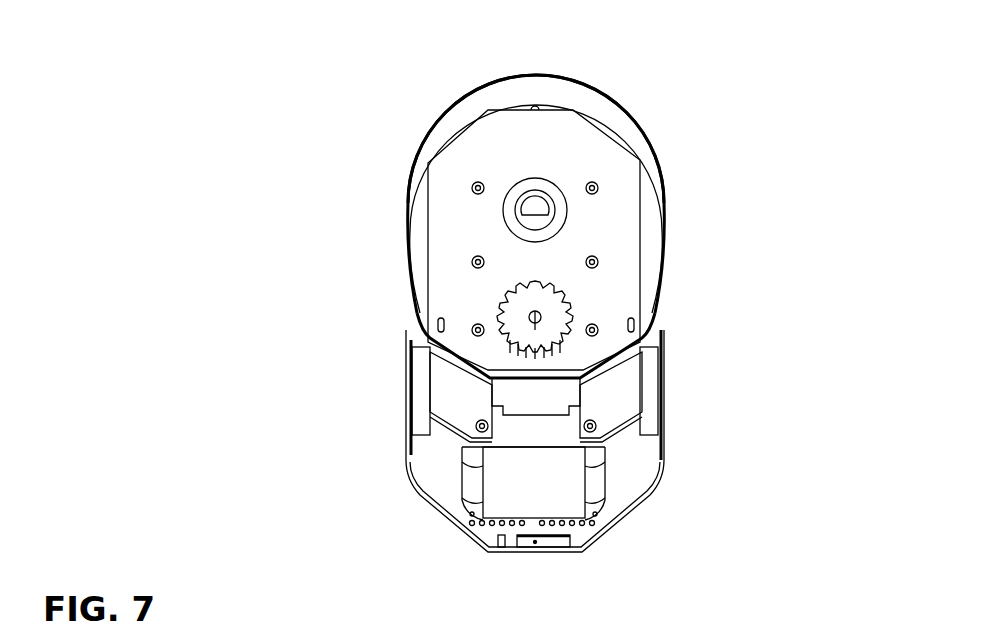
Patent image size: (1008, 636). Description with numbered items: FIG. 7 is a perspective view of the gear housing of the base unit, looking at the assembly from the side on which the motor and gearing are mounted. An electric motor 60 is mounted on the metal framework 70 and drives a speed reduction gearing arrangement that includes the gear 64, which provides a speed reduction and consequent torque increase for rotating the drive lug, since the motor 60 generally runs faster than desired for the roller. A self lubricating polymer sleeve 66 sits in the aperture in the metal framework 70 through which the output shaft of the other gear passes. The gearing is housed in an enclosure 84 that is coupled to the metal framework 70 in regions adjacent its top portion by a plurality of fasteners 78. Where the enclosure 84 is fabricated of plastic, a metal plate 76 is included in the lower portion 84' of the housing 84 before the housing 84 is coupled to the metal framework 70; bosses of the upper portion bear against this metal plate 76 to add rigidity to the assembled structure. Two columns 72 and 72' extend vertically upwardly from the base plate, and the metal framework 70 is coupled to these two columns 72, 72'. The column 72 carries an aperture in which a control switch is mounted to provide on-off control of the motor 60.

The electric motor 60 is at (578, 492).
The gear 64 is at (562, 348).
The self lubricating polymer sleeve 66 is at (559, 188).
The metal framework 70 is at (449, 389).
The column 72 is at (337, 408).
The column 72' is at (740, 395).
The metal plate 76 is at (567, 151).
The fasteners 78 is at (474, 325).
The enclosure 84 is at (536, 195).
The lower portion of housing 84' is at (586, 112).